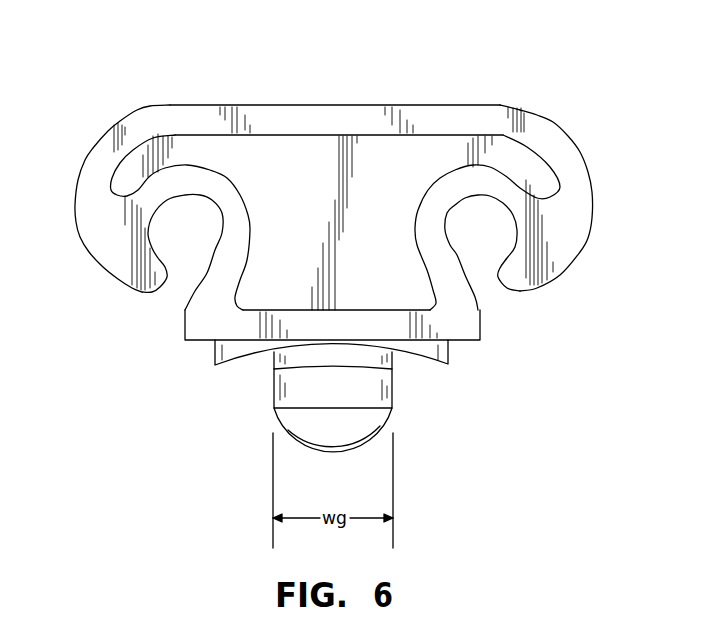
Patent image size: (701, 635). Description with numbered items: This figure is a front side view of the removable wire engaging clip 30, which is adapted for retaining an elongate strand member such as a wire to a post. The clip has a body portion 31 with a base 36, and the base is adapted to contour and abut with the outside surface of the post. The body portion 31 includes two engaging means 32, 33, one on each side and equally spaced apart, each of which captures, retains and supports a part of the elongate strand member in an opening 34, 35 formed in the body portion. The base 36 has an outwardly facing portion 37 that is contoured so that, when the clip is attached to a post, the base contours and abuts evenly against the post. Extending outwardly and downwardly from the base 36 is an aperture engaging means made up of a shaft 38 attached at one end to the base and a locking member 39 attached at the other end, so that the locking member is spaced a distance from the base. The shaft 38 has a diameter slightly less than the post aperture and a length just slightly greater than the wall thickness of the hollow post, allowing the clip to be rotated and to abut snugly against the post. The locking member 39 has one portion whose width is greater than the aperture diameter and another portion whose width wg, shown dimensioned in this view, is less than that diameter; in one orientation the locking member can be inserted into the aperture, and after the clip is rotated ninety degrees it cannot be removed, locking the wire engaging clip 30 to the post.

The wire engaging clip 30 is at (190, 84).
The body portion 31 is at (302, 170).
The engaging means 32 is at (577, 172).
The engaging means 33 is at (88, 182).
The opening 34 is at (474, 250).
The opening 35 is at (186, 253).
The base 36 is at (190, 340).
The outwardly facing portion 37 is at (235, 362).
The shaft 38 is at (387, 358).
The locking member 39 is at (358, 427).